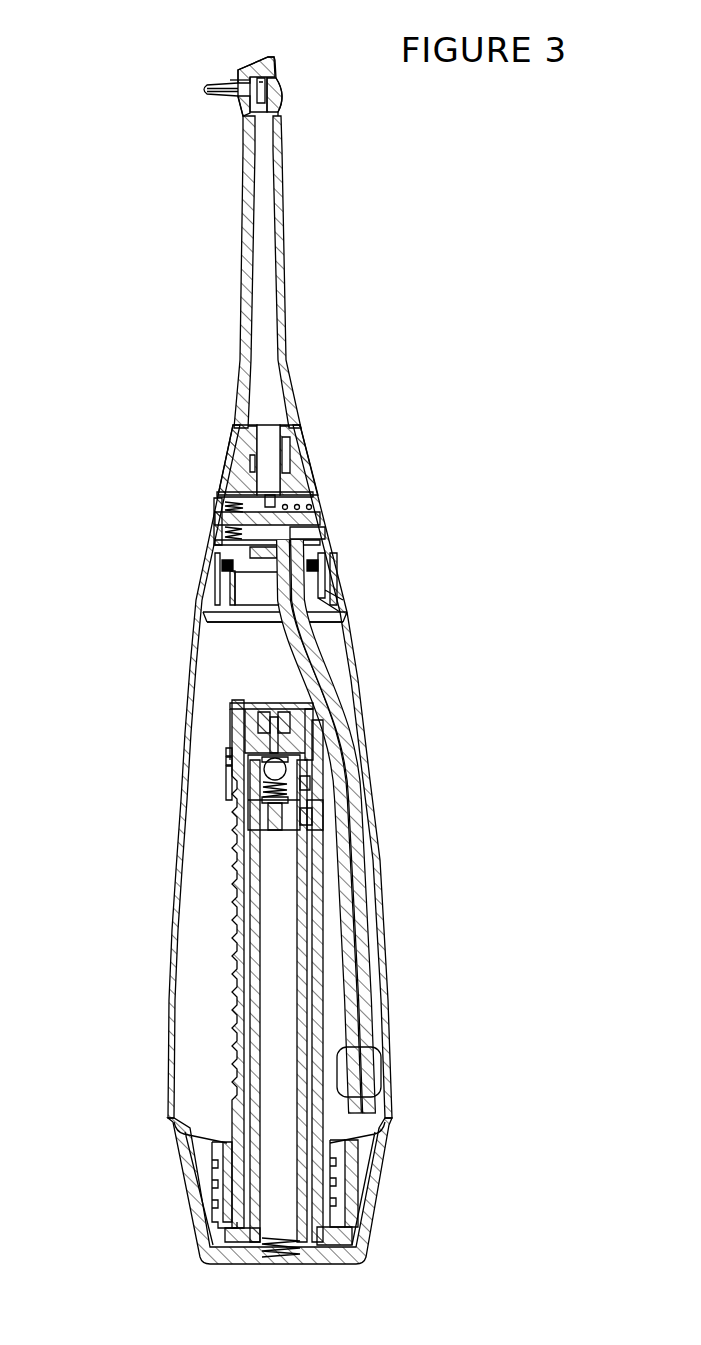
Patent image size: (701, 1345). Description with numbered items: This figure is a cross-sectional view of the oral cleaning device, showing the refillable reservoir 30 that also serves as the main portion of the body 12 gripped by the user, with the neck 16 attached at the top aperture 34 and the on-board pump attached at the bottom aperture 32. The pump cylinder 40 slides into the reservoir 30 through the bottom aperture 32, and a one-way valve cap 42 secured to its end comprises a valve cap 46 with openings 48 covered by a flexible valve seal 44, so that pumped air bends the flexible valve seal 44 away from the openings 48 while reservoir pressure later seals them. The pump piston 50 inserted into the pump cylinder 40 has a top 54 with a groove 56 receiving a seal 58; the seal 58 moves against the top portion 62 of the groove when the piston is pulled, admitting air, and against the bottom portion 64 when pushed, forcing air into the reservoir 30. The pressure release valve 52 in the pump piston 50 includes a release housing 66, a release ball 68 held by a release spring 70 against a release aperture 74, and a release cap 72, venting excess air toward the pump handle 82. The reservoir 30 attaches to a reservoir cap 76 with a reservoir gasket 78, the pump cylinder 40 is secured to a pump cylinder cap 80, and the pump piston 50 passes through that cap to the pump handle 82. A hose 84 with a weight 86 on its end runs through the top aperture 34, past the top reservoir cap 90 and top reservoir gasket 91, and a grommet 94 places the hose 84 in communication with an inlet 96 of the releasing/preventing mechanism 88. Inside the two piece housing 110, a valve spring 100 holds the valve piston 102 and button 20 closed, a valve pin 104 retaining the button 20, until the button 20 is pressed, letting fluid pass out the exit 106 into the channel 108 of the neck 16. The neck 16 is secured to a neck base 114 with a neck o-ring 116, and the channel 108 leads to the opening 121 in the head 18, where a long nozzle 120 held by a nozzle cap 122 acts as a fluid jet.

The body 12 is at (166, 1083).
The neck 16 is at (282, 285).
The head 18 is at (257, 53).
The button 20 is at (217, 508).
The refillable reservoir 30 is at (168, 1010).
The bottom aperture 32 is at (223, 1193).
The top aperture 34 is at (240, 586).
The pump cylinder 40 is at (232, 926).
The one-way valve cap 42 is at (232, 690).
The flexible valve seal 44 is at (300, 750).
The valve cap 46 is at (233, 705).
The openings 48 is at (298, 722).
The pump piston 50 is at (297, 942).
The pressure release valve 52 is at (303, 813).
The top 54 is at (310, 767).
The groove 56 is at (300, 780).
The seal 58 is at (233, 773).
The top portion 62 is at (233, 758).
The bottom portion 64 is at (233, 793).
The release housing 66 is at (233, 753).
The release ball 68 is at (307, 817).
The release spring 70 is at (268, 788).
The release cap 72 is at (275, 826).
The release aperture 74 is at (290, 762).
The reservoir cap 76 is at (352, 1165).
The reservoir gasket 78 is at (337, 1227).
The pump cylinder cap 80 is at (318, 1242).
The pump handle 82 is at (380, 1203).
The hose 84 is at (362, 980).
The weight 86 is at (383, 1068).
The releasing/preventing mechanism 88 is at (285, 497).
The top reservoir cap 90 is at (330, 603).
The top reservoir gasket 91 is at (235, 568).
The grommet 94 is at (312, 571).
The inlet 96 is at (295, 533).
The valve spring 100 is at (227, 500).
The valve piston 102 is at (233, 524).
The valve pin 104 is at (297, 514).
The exit 106 is at (285, 437).
The channel 108 is at (250, 228).
The two piece housing 110 is at (220, 547).
The neck base 114 is at (245, 470).
The neck o-ring 116 is at (291, 492).
The long nozzle 120 is at (211, 93).
The opening 121 is at (238, 83).
The nozzle cap 122 is at (283, 95).